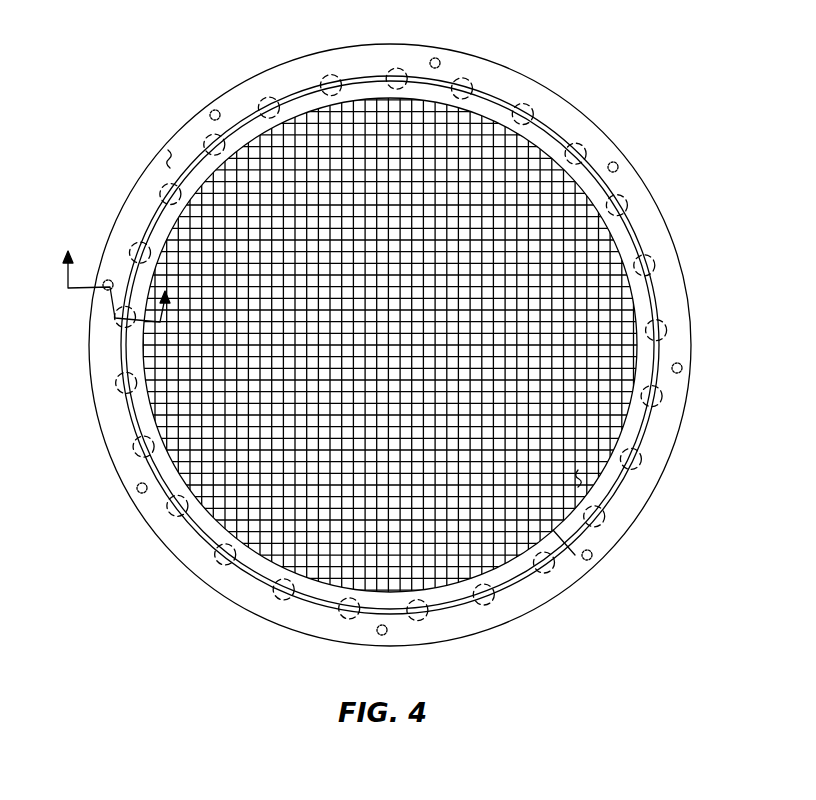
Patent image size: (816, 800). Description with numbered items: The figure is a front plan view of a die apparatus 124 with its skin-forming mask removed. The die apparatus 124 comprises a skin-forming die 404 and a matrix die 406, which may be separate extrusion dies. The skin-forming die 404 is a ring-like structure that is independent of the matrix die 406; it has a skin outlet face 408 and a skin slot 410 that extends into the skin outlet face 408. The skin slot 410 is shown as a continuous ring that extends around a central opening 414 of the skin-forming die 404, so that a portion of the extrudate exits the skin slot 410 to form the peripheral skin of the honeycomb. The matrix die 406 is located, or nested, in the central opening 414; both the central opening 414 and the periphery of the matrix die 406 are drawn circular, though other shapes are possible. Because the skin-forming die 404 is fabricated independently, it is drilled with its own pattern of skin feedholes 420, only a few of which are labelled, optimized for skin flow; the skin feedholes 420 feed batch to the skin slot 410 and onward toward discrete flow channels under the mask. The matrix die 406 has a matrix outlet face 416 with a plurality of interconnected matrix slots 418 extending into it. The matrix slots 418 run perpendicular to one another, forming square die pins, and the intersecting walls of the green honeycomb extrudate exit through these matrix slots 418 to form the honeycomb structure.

The die apparatus 124 is at (404, 339).
The skin-forming die 404 is at (210, 96).
The matrix die 406 is at (545, 144).
The skin outlet face 408 is at (166, 160).
The skin slot 410 is at (150, 200).
The central opening 414 is at (619, 248).
The matrix outlet face 416 is at (585, 479).
The matrix slots 418 is at (553, 530).
The skin feedholes 420 is at (332, 72).